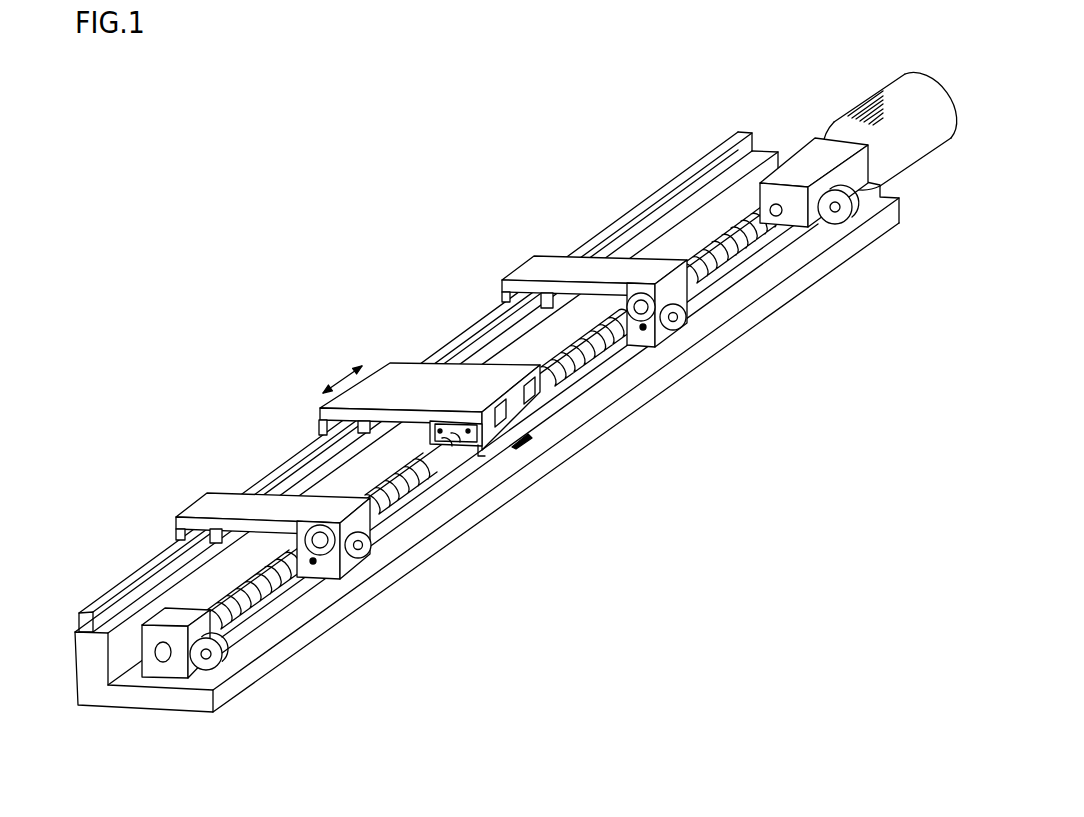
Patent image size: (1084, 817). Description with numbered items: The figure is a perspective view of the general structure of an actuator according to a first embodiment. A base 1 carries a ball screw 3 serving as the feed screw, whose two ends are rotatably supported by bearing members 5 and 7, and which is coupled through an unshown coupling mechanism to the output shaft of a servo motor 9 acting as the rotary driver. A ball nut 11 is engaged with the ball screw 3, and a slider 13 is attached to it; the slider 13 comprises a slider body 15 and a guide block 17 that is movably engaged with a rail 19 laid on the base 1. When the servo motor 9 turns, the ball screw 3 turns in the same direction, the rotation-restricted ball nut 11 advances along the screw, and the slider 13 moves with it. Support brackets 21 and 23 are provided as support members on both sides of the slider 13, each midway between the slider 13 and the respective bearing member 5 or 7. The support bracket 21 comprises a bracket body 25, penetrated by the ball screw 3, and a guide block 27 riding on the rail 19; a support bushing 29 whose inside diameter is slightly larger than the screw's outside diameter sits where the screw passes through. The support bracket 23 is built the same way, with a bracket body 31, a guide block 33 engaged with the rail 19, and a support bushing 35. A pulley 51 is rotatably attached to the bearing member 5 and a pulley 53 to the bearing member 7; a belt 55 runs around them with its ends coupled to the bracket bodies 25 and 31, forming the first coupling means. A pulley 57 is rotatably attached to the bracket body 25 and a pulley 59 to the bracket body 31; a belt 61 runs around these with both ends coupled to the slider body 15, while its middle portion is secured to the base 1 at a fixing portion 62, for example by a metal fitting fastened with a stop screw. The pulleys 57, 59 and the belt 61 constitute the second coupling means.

The base 1 is at (197, 706).
The ball screw 3 is at (727, 226).
The bearing member 5 is at (155, 677).
The bearing member 7 is at (880, 197).
The servo motor 9 is at (942, 139).
The ball nut 11 is at (467, 440).
The slider 13 is at (408, 399).
The slider body 15 is at (382, 372).
The guide block 17 is at (320, 409).
The rail 19 is at (122, 580).
The support bracket 21 is at (320, 536).
The support bracket 23 is at (663, 310).
The bracket body 25 is at (337, 568).
The guide block 27 is at (186, 518).
The support bushing 29 is at (314, 562).
The bracket body 31 is at (688, 368).
The guide block 33 is at (506, 277).
The support bushing 35 is at (643, 328).
The pulley 51 is at (210, 667).
The pulley 53 is at (840, 220).
The belt 55 is at (270, 630).
The pulley 57 is at (372, 550).
The pulley 59 is at (690, 316).
The belt 61 is at (577, 403).
The fixing portion 62 is at (530, 440).